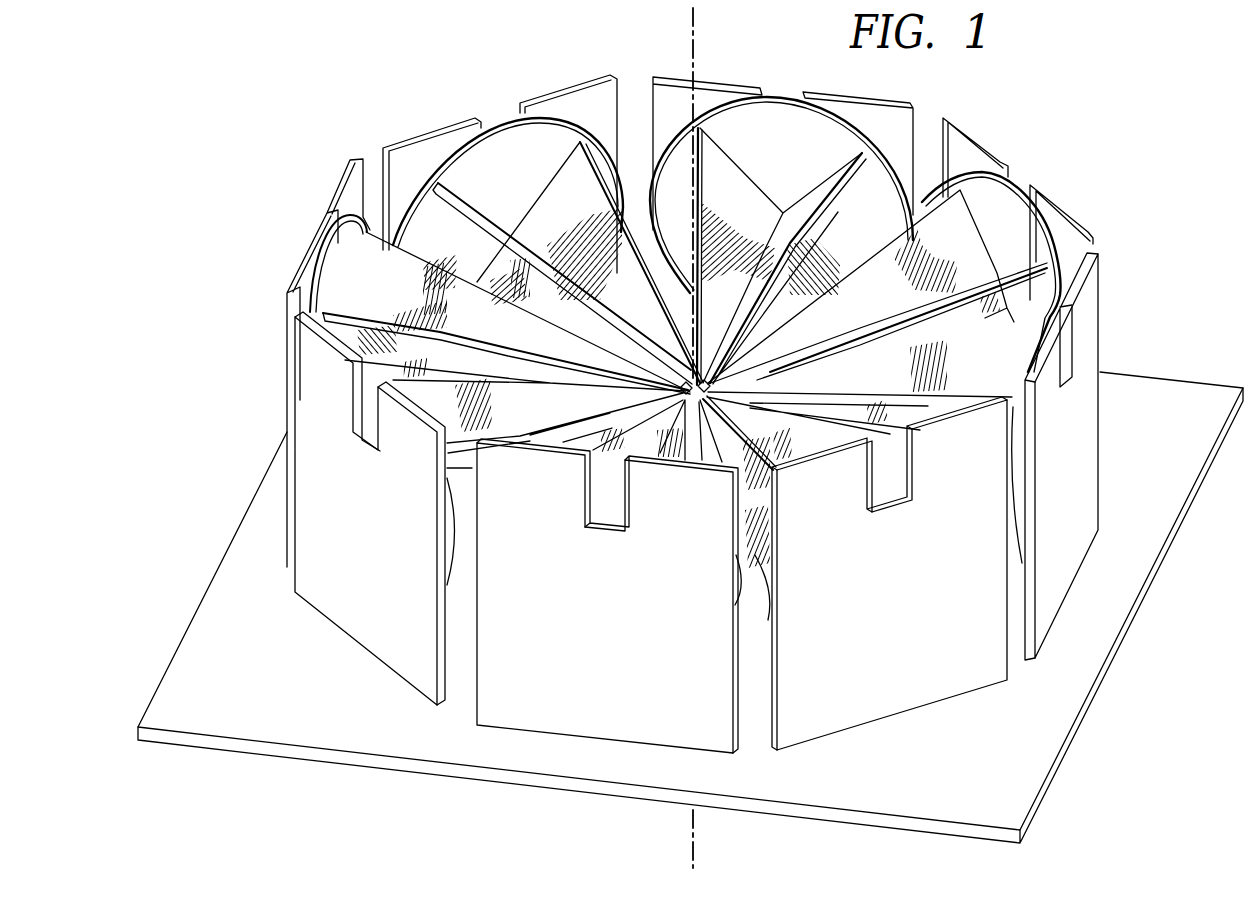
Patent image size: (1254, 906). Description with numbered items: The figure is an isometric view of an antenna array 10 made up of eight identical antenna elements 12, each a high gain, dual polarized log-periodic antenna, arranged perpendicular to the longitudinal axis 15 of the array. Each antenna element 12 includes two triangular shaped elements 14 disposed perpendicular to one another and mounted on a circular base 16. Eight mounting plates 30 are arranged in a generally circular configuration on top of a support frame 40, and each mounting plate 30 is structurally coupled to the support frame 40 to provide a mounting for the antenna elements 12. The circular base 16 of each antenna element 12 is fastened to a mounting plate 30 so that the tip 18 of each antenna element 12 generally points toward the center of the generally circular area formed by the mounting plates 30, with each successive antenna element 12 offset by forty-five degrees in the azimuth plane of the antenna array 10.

The antenna array 10 is at (398, 83).
The antenna element 12 is at (583, 214).
The triangular shaped element 14 is at (962, 222).
The longitudinal axis 15 is at (690, 27).
The circular base 16 is at (773, 123).
The tip 18 is at (697, 402).
The mounting plate 30 is at (913, 656).
The support frame 40 is at (978, 786).